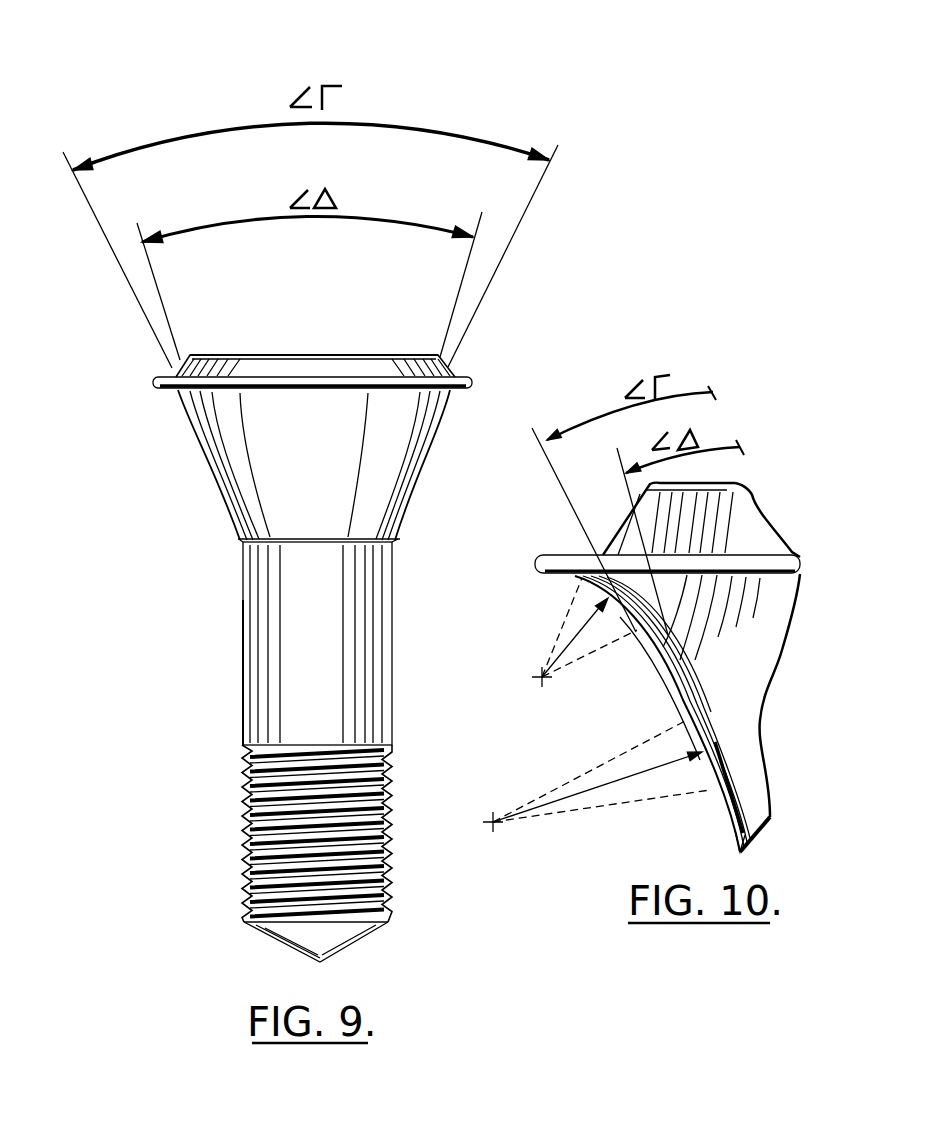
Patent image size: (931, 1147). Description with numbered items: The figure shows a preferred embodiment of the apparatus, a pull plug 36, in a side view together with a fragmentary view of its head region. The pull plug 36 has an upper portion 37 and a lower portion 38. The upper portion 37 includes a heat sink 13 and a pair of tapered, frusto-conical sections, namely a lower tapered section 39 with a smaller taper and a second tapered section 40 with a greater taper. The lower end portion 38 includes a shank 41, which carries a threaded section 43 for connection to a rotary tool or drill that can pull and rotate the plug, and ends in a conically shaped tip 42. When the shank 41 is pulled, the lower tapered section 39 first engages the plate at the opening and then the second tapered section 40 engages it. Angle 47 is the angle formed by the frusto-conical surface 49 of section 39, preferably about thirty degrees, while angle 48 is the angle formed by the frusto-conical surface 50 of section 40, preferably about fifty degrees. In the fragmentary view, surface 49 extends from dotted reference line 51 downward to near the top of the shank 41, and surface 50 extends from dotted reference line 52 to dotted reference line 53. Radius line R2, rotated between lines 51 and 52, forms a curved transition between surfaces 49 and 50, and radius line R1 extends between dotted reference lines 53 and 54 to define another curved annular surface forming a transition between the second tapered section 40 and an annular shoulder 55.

In FIG. 9, the pull plug 36 is at (220, 68).
In FIG. 9, the heat sink 13 is at (343, 367).
In FIG. 10, the heat sink 13 is at (758, 527).
In FIG. 9, the annular shoulder 55 is at (157, 377).
In FIG. 10, the annular shoulder 55 is at (535, 560).
In FIG. 9, the angle 48 is at (455, 135).
In FIG. 10, the angle 48 is at (712, 392).
In FIG. 9, the angle 47 is at (392, 217).
In FIG. 10, the angle 47 is at (740, 447).
In FIG. 9, the second tapered section 40 is at (207, 440).
In FIG. 10, the second tapered section 40 is at (672, 678).
In FIG. 9, the upper portion 37 is at (415, 450).
In FIG. 9, the frusto-conical surface 50 is at (333, 444).
In FIG. 10, the frusto-conical surface 50 is at (662, 697).
In FIG. 9, the frusto-conical surface 49 is at (336, 516).
In FIG. 10, the frusto-conical surface 49 is at (718, 838).
In FIG. 9, the lower tapered section 39 is at (250, 527).
In FIG. 10, the lower tapered section 39 is at (715, 800).
In FIG. 9, the lower portion 38 is at (334, 726).
In FIG. 9, the shank 41 is at (243, 717).
In FIG. 9, the threaded section 43 is at (247, 840).
In FIG. 9, the conically shaped tip 42 is at (293, 937).
In FIG. 10, the radius line R1 is at (572, 610).
In FIG. 10, the radius line R2 is at (630, 773).
In FIG. 10, the dotted reference line 54 is at (570, 597).
In FIG. 10, the dotted reference line 53 is at (607, 650).
In FIG. 10, the dotted reference line 52 is at (587, 770).
In FIG. 10, the dotted reference line 51 is at (597, 808).